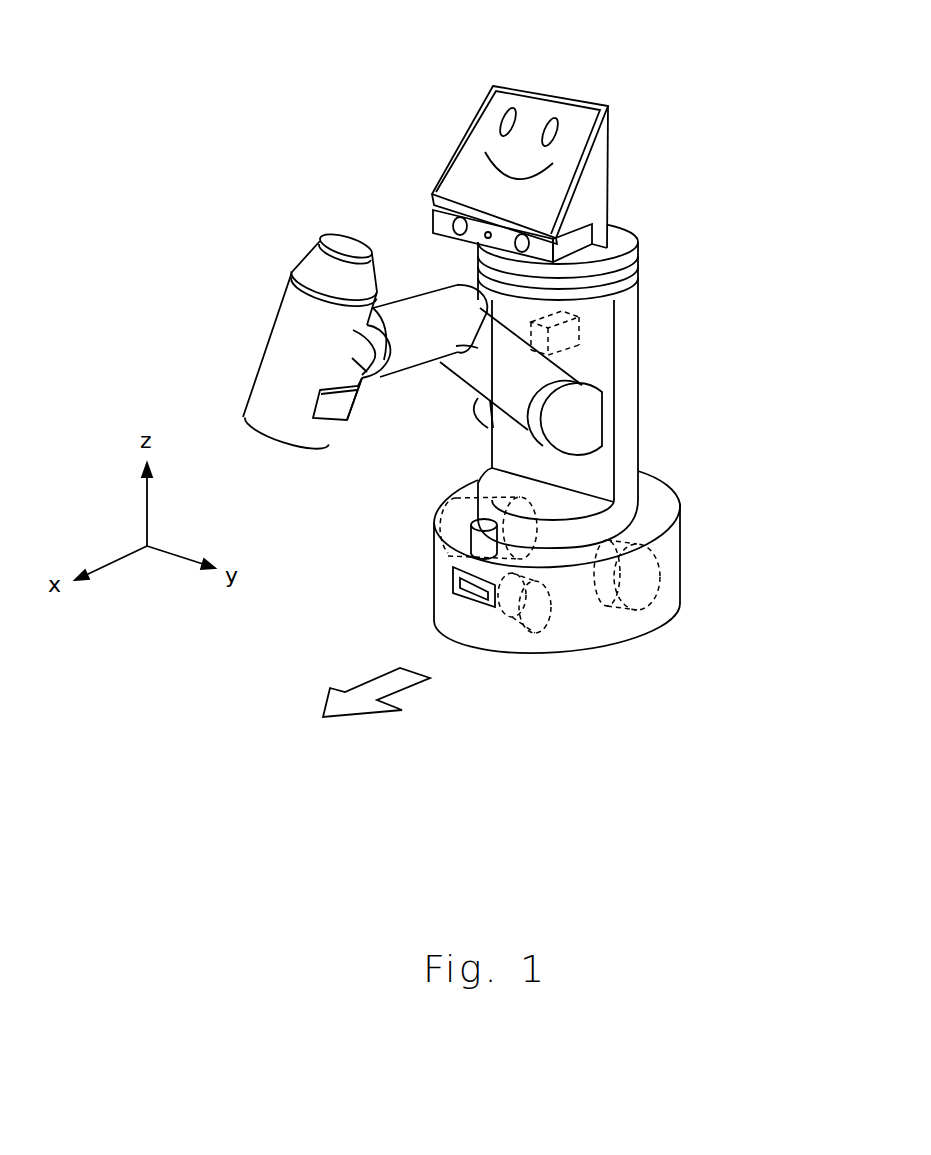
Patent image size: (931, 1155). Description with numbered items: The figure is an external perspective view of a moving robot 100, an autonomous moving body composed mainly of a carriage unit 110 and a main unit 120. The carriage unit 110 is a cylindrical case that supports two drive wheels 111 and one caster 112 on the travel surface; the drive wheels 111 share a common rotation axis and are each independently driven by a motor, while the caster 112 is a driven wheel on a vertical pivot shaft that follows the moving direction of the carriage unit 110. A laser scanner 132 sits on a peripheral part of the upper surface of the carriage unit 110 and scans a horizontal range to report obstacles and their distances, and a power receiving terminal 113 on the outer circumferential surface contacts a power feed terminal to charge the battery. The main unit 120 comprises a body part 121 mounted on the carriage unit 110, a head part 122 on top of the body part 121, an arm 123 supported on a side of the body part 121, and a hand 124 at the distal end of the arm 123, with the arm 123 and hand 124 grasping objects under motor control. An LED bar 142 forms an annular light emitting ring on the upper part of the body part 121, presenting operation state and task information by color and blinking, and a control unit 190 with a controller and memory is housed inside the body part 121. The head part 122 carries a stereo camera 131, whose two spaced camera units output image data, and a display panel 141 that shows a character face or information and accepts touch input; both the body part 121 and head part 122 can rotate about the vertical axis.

The moving robot 100 is at (256, 45).
The carriage unit 110 is at (755, 485).
The drive wheel 111 is at (438, 515).
The caster 112 is at (547, 637).
The power receiving terminal 113 is at (452, 588).
The main unit 120 is at (755, 75).
The body part 121 is at (628, 405).
The head part 122 is at (601, 189).
The arm 123 is at (490, 373).
The hand 124 is at (340, 407).
The stereo camera 131 is at (508, 258).
The laser scanner 132 is at (470, 546).
The display panel 141 is at (486, 105).
The LED bar 142 is at (620, 288).
The control unit 190 is at (580, 331).